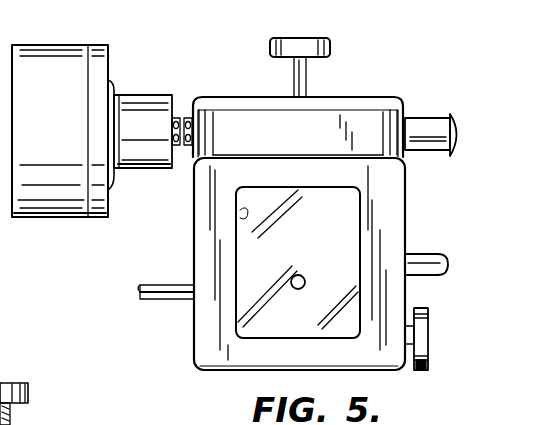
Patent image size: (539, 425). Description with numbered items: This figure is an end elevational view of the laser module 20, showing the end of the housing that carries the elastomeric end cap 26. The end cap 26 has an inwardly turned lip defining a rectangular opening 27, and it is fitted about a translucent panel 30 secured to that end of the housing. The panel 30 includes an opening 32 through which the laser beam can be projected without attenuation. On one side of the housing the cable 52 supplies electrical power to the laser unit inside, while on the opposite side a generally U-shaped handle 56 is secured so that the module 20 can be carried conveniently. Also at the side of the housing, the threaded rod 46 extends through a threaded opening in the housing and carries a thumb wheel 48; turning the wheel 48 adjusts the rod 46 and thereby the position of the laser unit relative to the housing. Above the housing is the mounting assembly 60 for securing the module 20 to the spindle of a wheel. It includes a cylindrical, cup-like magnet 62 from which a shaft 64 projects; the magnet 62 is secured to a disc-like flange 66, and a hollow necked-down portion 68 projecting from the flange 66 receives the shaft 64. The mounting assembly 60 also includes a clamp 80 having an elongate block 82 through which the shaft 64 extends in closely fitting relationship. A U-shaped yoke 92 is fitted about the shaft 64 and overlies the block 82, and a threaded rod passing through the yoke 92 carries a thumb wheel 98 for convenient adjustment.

The laser module 20 is at (92, 292).
The end cap 26 is at (206, 344).
The rectangular opening 27 is at (244, 212).
The translucent panel 30 is at (258, 252).
The opening 32 is at (302, 276).
The threaded rod 46 is at (409, 368).
The thumb wheel 48 is at (428, 362).
The cable 52 is at (146, 286).
The handle 56 is at (430, 272).
The mounting assembly 60 is at (236, 73).
The magnet 62 is at (57, 218).
The shaft 64 is at (444, 122).
The flange 66 is at (93, 218).
The necked-down portion 68 is at (157, 168).
The clamp 80 is at (205, 86).
The block 82 is at (356, 128).
The yoke 92 is at (25, 414).
The thumb wheel 98 is at (30, 393).